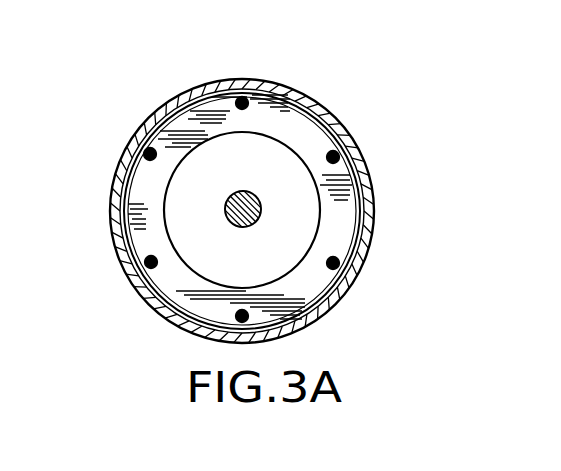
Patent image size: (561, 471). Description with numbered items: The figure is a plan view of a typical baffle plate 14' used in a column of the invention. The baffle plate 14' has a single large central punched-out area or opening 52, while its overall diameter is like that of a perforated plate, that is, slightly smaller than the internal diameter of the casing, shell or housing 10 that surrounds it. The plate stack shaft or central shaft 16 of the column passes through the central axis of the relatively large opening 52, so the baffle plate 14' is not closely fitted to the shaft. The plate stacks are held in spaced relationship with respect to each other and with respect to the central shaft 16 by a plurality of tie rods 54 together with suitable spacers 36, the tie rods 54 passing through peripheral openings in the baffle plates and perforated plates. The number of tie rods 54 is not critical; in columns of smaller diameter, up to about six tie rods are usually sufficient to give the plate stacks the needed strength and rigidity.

The casing 10 is at (120, 250).
The baffle plate 14' is at (219, 211).
The central shaft 16 is at (262, 207).
The spacers 36 is at (338, 260).
The opening 52 is at (276, 150).
The tie rods 54 is at (152, 148).